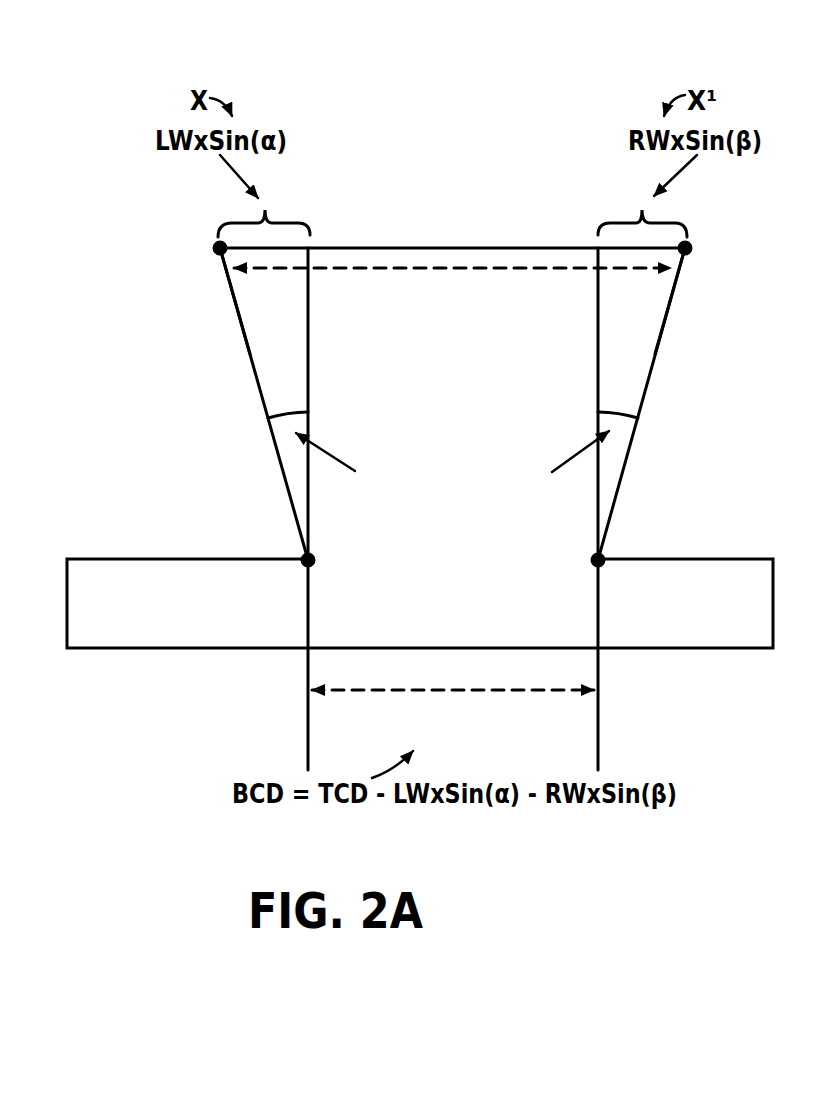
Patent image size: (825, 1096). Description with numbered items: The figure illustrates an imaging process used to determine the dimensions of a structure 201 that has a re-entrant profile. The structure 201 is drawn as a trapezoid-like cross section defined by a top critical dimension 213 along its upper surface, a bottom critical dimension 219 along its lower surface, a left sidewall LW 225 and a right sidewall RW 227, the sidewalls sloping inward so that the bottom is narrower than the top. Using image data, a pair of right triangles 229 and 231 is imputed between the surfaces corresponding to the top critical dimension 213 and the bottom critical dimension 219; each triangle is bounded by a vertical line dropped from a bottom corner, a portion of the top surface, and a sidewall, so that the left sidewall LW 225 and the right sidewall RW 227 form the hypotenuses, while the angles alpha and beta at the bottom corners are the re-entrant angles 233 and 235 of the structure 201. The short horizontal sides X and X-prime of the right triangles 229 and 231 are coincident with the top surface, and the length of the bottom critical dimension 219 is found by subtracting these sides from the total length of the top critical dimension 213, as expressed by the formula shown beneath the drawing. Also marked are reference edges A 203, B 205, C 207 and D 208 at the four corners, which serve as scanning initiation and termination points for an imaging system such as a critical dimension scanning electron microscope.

The structure 201 is at (478, 50).
The reference edge A 203 is at (287, 572).
The reference edge B 205 is at (197, 244).
The reference edge C 207 is at (705, 243).
The reference edge D 208 is at (617, 573).
The top critical dimension (TCD) 213 is at (492, 223).
The bottom critical dimension (BCD) 219 is at (603, 692).
The left sidewall LW 225 is at (252, 374).
The right sidewall RW 227 is at (653, 374).
The right triangle T12 229 is at (261, 303).
The right triangle T34 231 is at (646, 303).
The re-entrant angle 233 is at (296, 493).
The re-entrant angle 235 is at (614, 488).